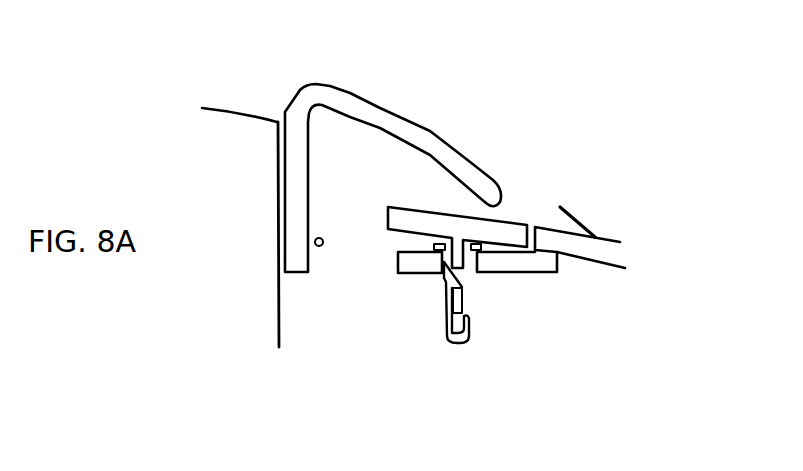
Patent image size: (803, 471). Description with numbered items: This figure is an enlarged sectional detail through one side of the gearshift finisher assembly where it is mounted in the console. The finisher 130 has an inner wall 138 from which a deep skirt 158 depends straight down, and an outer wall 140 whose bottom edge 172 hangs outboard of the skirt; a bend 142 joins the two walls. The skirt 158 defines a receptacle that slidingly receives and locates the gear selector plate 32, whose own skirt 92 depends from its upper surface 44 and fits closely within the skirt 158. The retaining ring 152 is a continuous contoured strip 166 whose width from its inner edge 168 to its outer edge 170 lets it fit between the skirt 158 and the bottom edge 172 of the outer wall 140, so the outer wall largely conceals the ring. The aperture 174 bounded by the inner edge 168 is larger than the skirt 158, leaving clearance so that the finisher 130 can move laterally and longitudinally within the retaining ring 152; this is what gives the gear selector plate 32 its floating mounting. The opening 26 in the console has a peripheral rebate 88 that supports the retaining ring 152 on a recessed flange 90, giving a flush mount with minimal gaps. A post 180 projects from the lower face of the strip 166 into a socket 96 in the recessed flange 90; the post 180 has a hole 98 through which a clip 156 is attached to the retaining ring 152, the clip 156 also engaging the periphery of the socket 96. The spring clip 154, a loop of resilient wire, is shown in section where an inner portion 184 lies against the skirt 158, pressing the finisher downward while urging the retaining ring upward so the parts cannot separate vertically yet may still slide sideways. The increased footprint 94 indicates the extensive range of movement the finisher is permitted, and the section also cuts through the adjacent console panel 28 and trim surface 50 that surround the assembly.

The opening 26 is at (335, 285).
The outer panel 28 is at (617, 267).
The gear selector plate 32 is at (223, 158).
The upper surface 44 is at (240, 110).
The outer panel plate 50 is at (620, 242).
The peripheral rebate 88 is at (503, 253).
The recessed flange 90 is at (487, 272).
The skirt 92 is at (272, 320).
The footprint 94 is at (580, 221).
The socket 96 is at (469, 265).
The hole 98 is at (449, 290).
The finisher 130 is at (350, 107).
The inner wall 138 is at (293, 140).
The outer wall 140 is at (465, 162).
The bend 142 is at (322, 88).
The retaining ring 152 is at (523, 219).
The spring clip 154 is at (315, 243).
The clip 156 is at (460, 344).
The skirt 158 is at (292, 202).
The contoured strip 166 is at (425, 210).
The inner edge 168 is at (401, 205).
The outer edge 170 is at (548, 271).
The bottom edge 172 is at (477, 240).
The aperture 174 is at (362, 220).
The post 180 is at (513, 222).
The inner portion 184 is at (315, 245).